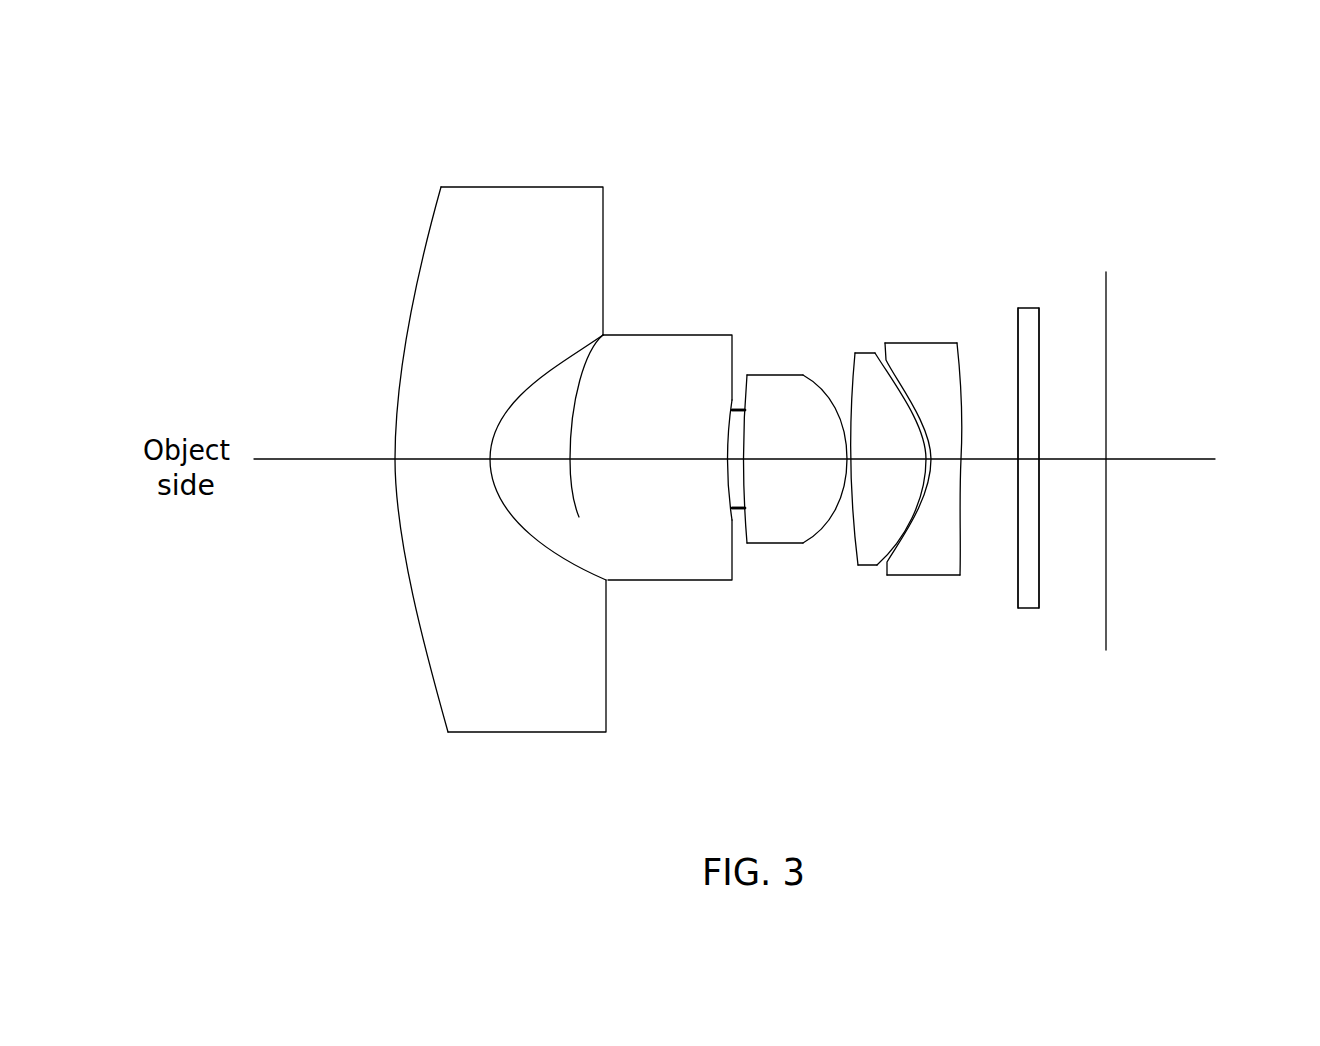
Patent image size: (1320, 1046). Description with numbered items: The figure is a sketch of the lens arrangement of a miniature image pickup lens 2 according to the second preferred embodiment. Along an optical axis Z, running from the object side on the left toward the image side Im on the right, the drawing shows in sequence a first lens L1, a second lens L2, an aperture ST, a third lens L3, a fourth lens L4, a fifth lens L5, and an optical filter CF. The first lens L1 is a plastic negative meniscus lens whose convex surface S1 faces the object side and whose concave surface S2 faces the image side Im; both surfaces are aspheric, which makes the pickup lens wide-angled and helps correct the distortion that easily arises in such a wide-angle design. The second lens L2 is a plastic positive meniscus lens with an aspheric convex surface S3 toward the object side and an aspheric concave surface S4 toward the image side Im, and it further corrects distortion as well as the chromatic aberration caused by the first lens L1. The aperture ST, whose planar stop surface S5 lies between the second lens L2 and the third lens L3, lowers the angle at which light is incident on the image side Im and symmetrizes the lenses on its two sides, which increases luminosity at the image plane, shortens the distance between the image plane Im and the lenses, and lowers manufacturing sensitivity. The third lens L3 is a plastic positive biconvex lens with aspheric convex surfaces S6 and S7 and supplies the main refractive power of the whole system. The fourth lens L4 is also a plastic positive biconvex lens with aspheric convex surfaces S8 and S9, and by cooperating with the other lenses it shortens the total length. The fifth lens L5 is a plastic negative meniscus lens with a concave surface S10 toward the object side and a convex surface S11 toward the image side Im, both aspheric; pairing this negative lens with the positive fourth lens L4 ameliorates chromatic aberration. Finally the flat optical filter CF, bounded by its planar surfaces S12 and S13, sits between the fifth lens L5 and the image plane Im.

The miniature image pickup lens 2 is at (1207, 130).
The optical axis Z is at (292, 459).
The first lens L1 is at (493, 438).
The second lens L2 is at (651, 452).
The third lens L3 is at (796, 488).
The fourth lens L4 is at (872, 497).
The fifth lens L5 is at (934, 479).
The aperture ST is at (742, 397).
The optical filter CF is at (1080, 474).
The image side Im is at (1108, 607).
The convex surface S1 is at (417, 608).
The concave surface S2 is at (562, 590).
The convex surface S3 is at (579, 517).
The concave surface S4 is at (732, 483).
The aperture surface S5 is at (737, 513).
The convex surface S6 is at (747, 480).
The convex surface S7 is at (820, 540).
The convex surface S8 is at (850, 505).
The convex surface S9 is at (907, 527).
The concave surface S10 is at (925, 507).
The convex surface S11 is at (960, 477).
The filter surface S12 is at (1018, 563).
The filter surface S13 is at (1040, 578).